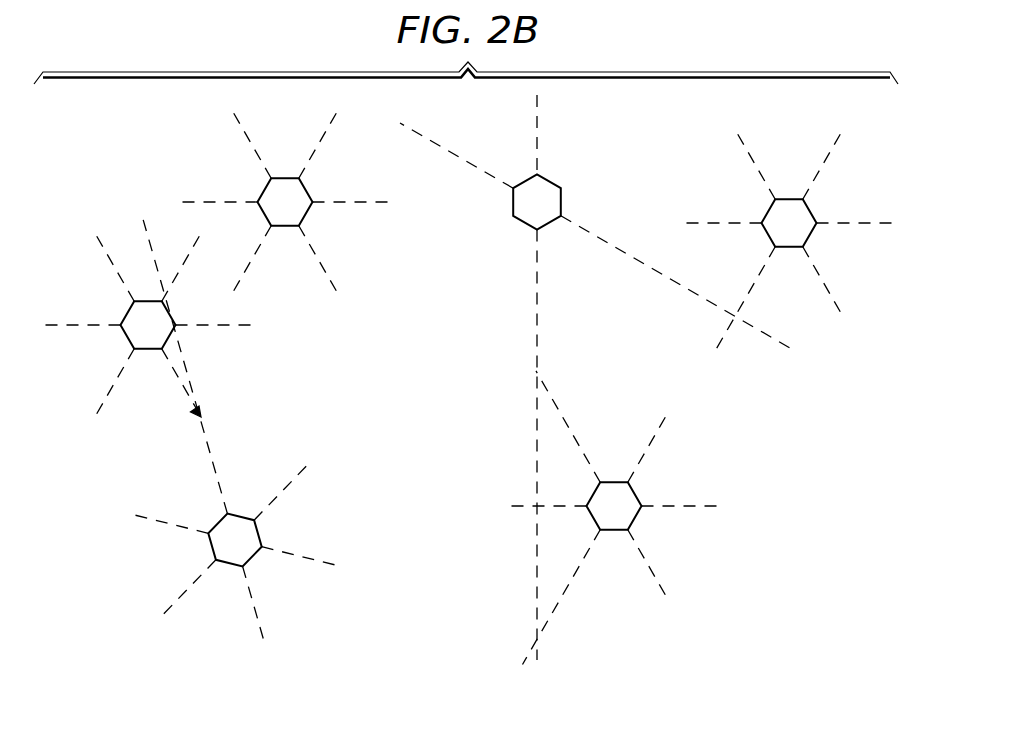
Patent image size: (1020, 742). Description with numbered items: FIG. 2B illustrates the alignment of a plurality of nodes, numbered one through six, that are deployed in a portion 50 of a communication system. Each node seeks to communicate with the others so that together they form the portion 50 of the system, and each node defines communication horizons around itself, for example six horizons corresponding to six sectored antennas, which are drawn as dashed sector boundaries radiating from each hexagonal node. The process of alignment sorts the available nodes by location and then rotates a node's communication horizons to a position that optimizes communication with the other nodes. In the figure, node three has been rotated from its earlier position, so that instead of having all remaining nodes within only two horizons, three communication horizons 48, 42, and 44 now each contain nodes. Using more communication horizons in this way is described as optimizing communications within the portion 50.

The communication horizon 42 is at (248, 483).
The communication horizon 44 is at (290, 523).
The communication horizon 48 is at (194, 500).
The portion of the communication system 50 is at (842, 499).